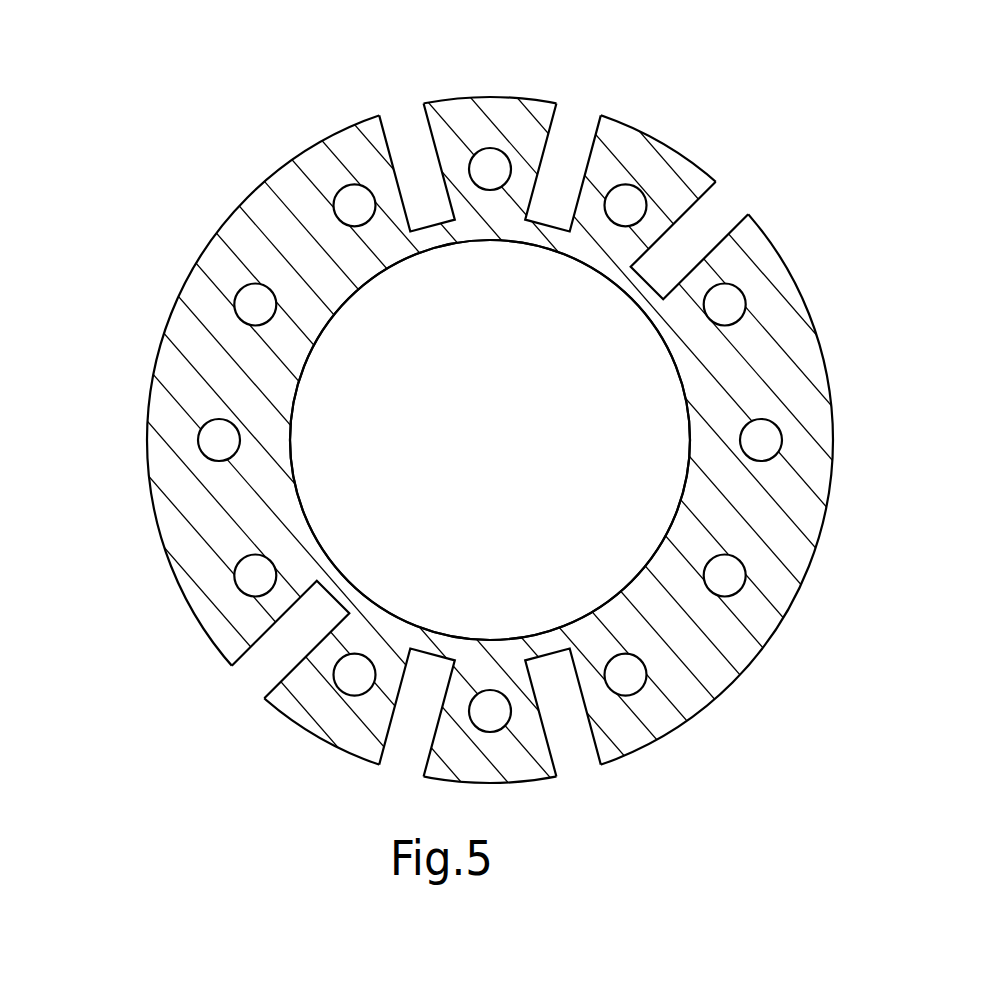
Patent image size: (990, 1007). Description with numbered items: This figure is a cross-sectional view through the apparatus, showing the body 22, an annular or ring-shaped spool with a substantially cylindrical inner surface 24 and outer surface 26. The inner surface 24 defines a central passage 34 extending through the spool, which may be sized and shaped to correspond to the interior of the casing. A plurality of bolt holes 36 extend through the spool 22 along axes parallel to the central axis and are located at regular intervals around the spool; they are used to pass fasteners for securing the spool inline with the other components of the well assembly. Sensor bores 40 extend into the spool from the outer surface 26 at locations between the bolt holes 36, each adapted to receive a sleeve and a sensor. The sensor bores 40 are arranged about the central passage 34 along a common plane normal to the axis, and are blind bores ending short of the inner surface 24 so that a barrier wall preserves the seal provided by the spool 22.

The body 22 is at (678, 168).
The inner surface 24 is at (322, 340).
The outer surface 26 is at (167, 329).
The central passage 34 is at (595, 457).
The bolt holes 36 is at (237, 577).
The sensor bores 40 is at (405, 127).